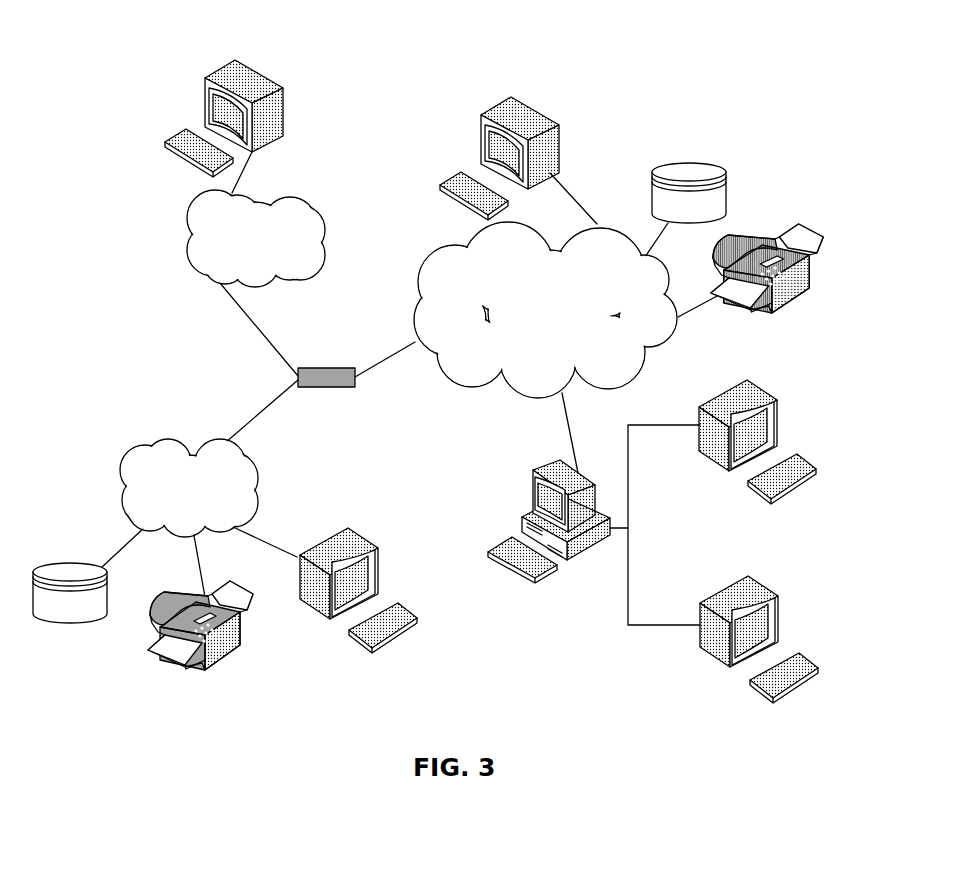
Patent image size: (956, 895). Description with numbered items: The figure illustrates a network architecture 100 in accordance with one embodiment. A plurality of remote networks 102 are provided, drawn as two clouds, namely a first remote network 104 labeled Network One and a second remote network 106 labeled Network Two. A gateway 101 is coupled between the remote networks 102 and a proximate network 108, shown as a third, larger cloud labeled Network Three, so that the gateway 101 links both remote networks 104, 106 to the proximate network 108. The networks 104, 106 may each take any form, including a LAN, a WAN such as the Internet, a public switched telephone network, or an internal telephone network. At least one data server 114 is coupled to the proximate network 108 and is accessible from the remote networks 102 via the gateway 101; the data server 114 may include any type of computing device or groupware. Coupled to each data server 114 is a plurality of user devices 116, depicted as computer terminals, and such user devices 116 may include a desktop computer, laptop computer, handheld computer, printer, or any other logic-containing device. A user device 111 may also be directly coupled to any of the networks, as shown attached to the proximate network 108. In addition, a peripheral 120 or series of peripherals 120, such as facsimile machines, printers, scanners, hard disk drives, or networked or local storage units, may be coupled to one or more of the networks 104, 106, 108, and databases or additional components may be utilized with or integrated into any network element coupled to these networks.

The network architecture 100 is at (442, 357).
The gateway 101 is at (318, 367).
The remote networks 102 is at (134, 347).
The first remote network 104 is at (122, 463).
The second remote network 106 is at (318, 213).
The proximate network 108 is at (645, 367).
The user device 111 is at (559, 126).
The data server 114 is at (532, 488).
The user devices 116 is at (284, 96).
The peripheral 120 is at (73, 622).